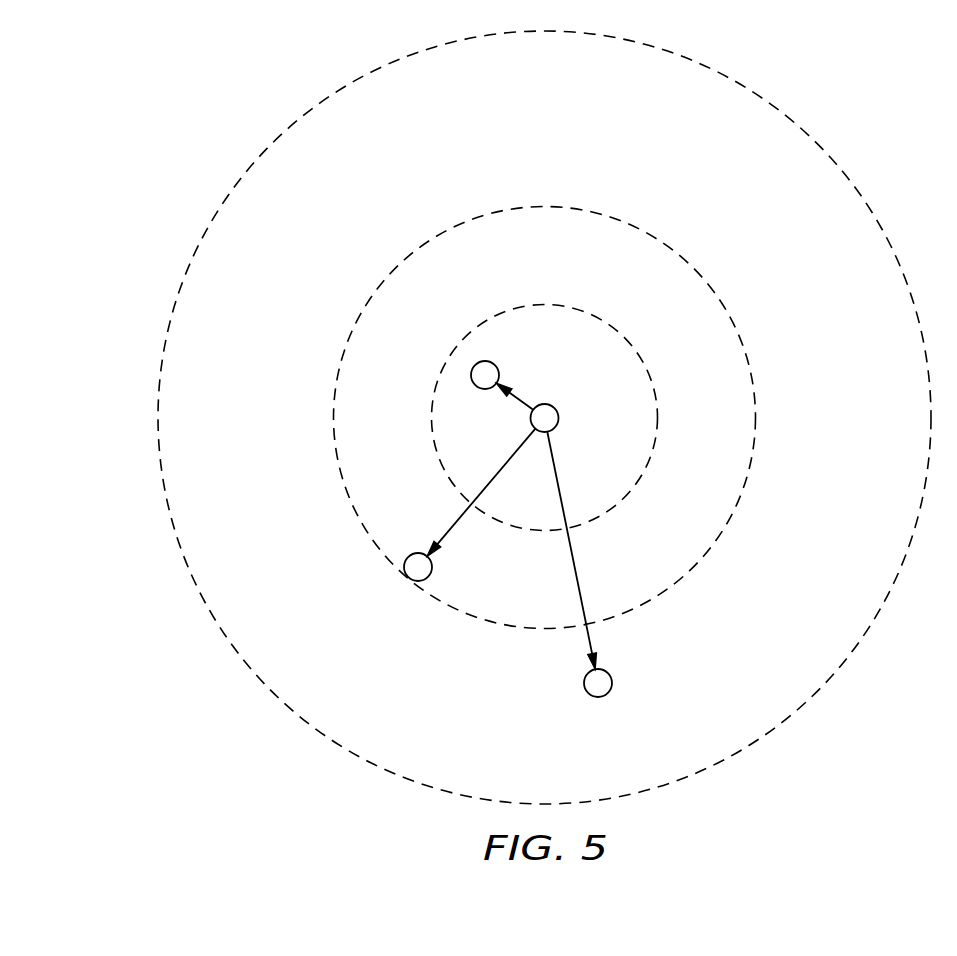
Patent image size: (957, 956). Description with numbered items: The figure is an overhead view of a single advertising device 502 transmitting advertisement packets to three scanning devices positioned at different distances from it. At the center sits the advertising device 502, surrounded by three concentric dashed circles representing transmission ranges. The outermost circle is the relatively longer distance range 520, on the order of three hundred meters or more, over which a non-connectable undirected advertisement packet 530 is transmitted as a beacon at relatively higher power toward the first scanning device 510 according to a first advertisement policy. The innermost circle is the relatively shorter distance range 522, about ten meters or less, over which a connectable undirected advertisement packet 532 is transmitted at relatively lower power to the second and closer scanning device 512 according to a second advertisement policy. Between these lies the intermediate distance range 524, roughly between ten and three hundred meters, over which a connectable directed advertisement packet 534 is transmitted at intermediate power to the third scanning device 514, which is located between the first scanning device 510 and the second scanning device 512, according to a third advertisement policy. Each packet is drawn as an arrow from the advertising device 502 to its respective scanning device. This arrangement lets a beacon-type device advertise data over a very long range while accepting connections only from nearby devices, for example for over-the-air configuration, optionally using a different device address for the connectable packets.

The advertising device 502 is at (558, 419).
The first scanning device 510 is at (611, 675).
The second scanning device 512 is at (498, 370).
The third scanning device 514 is at (418, 553).
The longer distance range 520 is at (838, 155).
The shorter distance range 522 is at (602, 320).
The intermediate distance range 524 is at (755, 432).
The non-connectable undirected advertisement packet 530 is at (580, 590).
The connectable undirected advertisement packet 532 is at (524, 401).
The connectable directed advertisement packet 534 is at (505, 463).